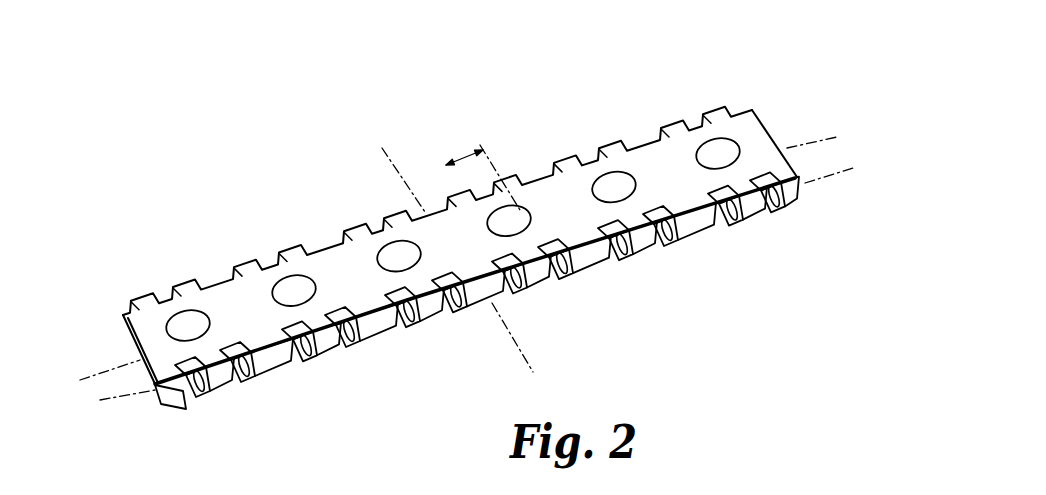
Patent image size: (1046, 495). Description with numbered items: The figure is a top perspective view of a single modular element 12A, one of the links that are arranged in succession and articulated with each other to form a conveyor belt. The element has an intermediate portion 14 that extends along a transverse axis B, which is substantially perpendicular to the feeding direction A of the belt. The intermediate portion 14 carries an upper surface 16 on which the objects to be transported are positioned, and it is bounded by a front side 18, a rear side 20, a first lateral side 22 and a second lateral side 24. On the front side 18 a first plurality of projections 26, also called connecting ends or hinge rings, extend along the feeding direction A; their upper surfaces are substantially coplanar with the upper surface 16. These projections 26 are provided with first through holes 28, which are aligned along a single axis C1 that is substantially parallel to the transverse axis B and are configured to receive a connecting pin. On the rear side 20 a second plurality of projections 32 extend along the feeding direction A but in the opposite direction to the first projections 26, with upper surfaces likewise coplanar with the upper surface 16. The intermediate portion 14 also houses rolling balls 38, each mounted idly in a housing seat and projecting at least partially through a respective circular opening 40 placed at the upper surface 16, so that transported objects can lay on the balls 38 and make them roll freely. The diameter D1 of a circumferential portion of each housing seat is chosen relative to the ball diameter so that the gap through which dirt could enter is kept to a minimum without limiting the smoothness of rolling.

The modular element 12A is at (763, 101).
The intermediate portion 14 is at (324, 249).
The upper surface 16 is at (550, 210).
The front side 18 is at (400, 307).
The rear side 20 is at (633, 147).
The first lateral side 22 is at (128, 350).
The second lateral side 24 is at (793, 163).
The first plurality of projections 26 is at (757, 227).
The first through holes 28 is at (733, 214).
The second plurality of projections 32 is at (180, 278).
The rolling ball 38 is at (715, 155).
The circular opening 40 is at (733, 138).
The diameter of circumferential portion of housing seat D1 is at (462, 157).
The feeding direction A is at (525, 360).
The transverse axis B is at (830, 137).
The axis of first through holes C1 is at (842, 171).